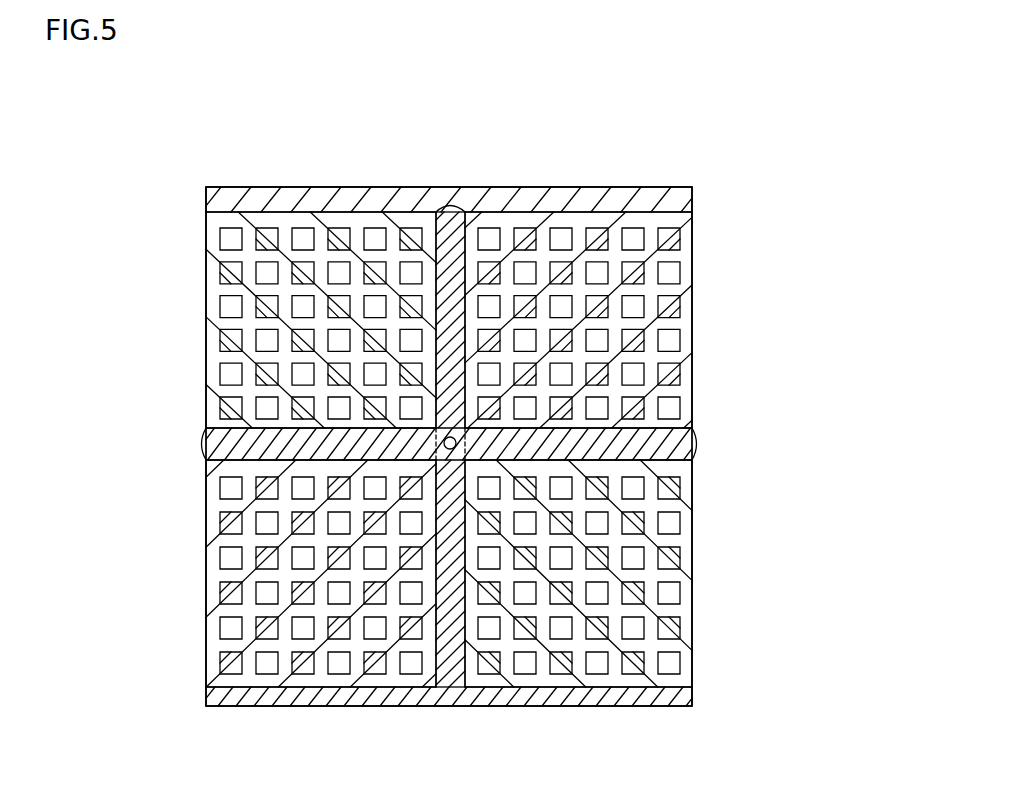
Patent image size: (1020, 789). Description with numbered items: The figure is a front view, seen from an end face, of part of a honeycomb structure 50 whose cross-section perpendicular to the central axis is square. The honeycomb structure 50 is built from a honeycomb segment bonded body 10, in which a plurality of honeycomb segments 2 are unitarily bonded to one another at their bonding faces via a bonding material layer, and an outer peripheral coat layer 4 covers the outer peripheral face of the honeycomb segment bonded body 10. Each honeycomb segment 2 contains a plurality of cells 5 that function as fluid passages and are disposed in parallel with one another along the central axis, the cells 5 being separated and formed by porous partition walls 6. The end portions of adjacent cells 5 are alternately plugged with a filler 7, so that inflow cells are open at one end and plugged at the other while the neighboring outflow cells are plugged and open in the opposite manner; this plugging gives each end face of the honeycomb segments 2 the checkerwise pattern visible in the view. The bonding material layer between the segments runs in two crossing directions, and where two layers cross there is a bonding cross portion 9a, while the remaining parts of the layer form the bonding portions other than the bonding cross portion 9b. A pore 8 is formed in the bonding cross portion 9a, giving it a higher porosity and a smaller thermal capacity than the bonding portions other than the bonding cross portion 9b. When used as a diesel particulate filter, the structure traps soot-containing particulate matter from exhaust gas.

The honeycomb structure 50 is at (345, 145).
The honeycomb segment bonded body 10 is at (840, 583).
The honeycomb segment 2 is at (703, 315).
The outer peripheral coat layer 4 is at (537, 188).
The cell 5 is at (305, 240).
The partition wall 6 is at (357, 242).
The filler 7 is at (267, 238).
The pore 8 is at (455, 450).
The bonding cross portion 9a is at (447, 462).
The bonding portion other than the bonding cross portion 9b is at (468, 210).